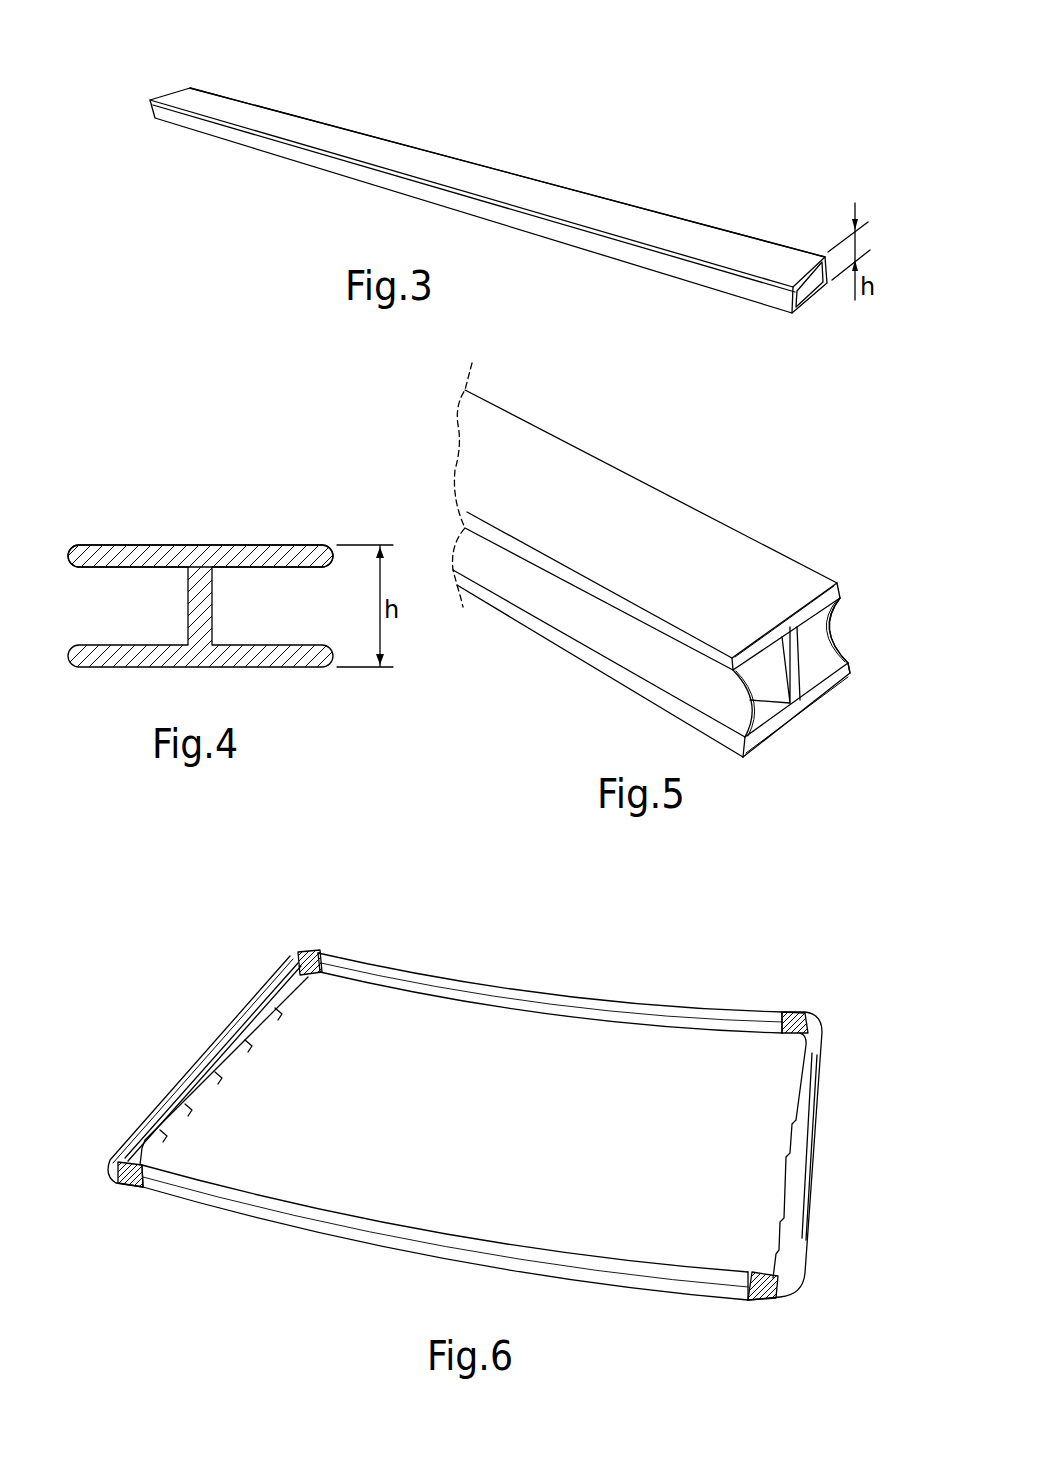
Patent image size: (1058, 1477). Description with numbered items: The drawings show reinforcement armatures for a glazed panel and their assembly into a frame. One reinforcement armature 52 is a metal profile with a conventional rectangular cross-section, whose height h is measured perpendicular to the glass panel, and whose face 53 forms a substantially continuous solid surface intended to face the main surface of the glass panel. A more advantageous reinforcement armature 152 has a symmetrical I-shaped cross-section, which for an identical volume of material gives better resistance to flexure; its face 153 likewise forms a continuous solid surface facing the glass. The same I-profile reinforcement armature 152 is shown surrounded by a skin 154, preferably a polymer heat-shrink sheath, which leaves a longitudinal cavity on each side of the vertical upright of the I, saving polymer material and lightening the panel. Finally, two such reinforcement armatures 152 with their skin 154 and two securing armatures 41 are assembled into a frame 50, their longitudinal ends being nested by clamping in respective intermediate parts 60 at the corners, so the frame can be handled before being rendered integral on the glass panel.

In FIG. 3, the reinforcement armature 52 is at (483, 128).
In FIG. 3, the face forming a substantially continuous solid surface 53 is at (593, 213).
In FIG. 4, the reinforcement armature 152 is at (133, 510).
In FIG. 5, the reinforcement armature 152 is at (800, 680).
In FIG. 6, the reinforcement armature 152 is at (655, 985).
In FIG. 4, the face forming a substantially continuous solid surface 153 is at (245, 540).
In FIG. 5, the skin 154 is at (843, 625).
In FIG. 6, the frame 50 is at (510, 1104).
In FIG. 6, the securing armature 41 is at (195, 1037).
In FIG. 6, the intermediate part 60 is at (313, 938).